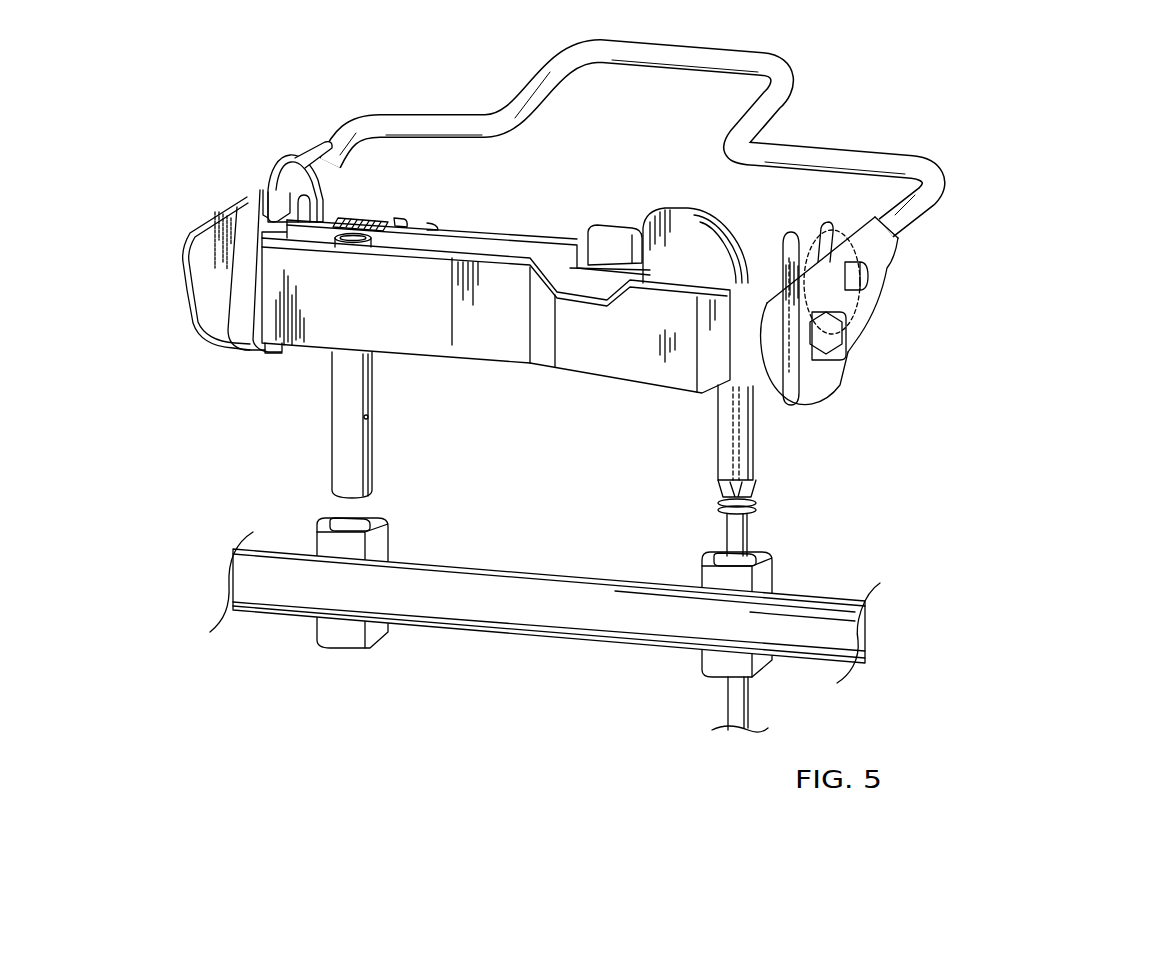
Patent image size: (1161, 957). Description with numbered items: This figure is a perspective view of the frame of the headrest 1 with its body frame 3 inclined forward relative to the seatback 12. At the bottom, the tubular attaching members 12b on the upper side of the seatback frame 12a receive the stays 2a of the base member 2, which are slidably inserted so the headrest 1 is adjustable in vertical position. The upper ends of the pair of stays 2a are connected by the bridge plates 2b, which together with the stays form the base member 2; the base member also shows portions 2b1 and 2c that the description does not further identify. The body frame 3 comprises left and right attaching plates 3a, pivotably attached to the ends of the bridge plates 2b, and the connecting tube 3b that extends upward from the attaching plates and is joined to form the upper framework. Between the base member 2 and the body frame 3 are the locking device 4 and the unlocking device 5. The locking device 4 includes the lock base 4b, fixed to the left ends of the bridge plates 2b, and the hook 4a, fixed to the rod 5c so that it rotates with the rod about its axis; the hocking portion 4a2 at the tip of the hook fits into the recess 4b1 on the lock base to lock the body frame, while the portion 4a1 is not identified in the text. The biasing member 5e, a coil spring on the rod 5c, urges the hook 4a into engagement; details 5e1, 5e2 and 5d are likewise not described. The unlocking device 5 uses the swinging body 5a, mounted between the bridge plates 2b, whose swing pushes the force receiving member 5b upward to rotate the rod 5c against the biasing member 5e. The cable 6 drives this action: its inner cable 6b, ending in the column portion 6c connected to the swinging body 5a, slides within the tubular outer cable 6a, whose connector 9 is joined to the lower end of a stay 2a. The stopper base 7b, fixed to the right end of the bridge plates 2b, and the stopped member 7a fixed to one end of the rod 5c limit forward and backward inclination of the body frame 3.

The headrest 1 is at (490, 70).
The base member 2 is at (507, 368).
The stays 2a is at (345, 398).
The bridge plates 2b is at (432, 243).
The rib 2b1 is at (593, 268).
The groove 2c is at (484, 342).
The body frame 3 is at (525, 289).
The attaching plates 3a is at (205, 303).
The connecting tube 3b is at (632, 186).
The locking device 4 is at (283, 243).
The hook 4a is at (286, 161).
The hook inner portion 4a1 is at (315, 202).
The hocking portion 4a2 is at (283, 190).
The lock base 4b is at (235, 333).
The recess 4b1 is at (247, 212).
The unlocking device 5 is at (547, 299).
The swinging body 5a is at (731, 227).
The force receiving member 5b is at (604, 238).
The rod 5c is at (495, 236).
The bracket recess 5d is at (653, 303).
The biasing member 5e is at (368, 222).
The ledge claw 5e1 is at (314, 158).
The ledge stop 5e2 is at (405, 218).
The cable 6 is at (728, 440).
The outer cable 6a is at (735, 545).
The inner cable 6b is at (706, 225).
The column portion 6c is at (690, 212).
The stopped member 7a is at (855, 300).
The stopper base 7b is at (830, 386).
The connector 9 is at (755, 490).
The seatback 12 is at (545, 611).
The frame 12a is at (783, 642).
The tubular attaching members 12b is at (353, 640).